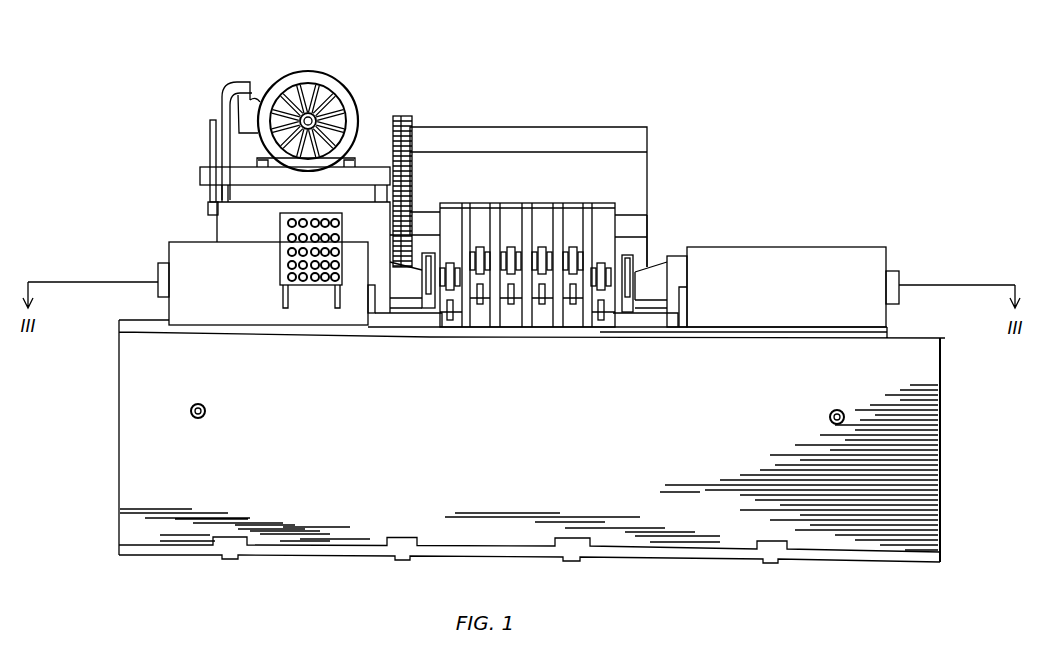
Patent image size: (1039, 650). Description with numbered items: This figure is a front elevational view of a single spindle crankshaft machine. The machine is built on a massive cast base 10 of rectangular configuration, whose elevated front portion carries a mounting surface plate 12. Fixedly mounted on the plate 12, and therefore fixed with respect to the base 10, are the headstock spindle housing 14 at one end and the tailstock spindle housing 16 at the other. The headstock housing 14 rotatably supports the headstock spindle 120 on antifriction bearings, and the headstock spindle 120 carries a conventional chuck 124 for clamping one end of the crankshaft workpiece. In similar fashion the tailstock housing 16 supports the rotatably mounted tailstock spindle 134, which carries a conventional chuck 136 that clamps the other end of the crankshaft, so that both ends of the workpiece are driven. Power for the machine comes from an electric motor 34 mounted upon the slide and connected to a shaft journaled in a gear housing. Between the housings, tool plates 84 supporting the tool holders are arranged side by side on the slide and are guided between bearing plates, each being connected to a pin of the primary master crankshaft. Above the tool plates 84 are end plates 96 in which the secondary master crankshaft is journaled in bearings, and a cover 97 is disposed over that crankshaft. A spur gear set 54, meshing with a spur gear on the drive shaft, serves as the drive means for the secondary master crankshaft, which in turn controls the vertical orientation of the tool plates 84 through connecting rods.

The base 10 is at (592, 482).
The mounting surface plate 12 is at (727, 333).
The headstock spindle housing 14 is at (274, 255).
The tailstock spindle housing 16 is at (793, 287).
The electric motor 34 is at (306, 71).
The spur gear set 54 is at (392, 150).
The tool plates 84 is at (577, 236).
The end plates 96 is at (648, 196).
The cover 97 is at (483, 133).
The headstock spindle 120 is at (384, 303).
The chuck 124 is at (427, 308).
The tailstock spindle 134 is at (676, 257).
The chuck 136 is at (628, 305).